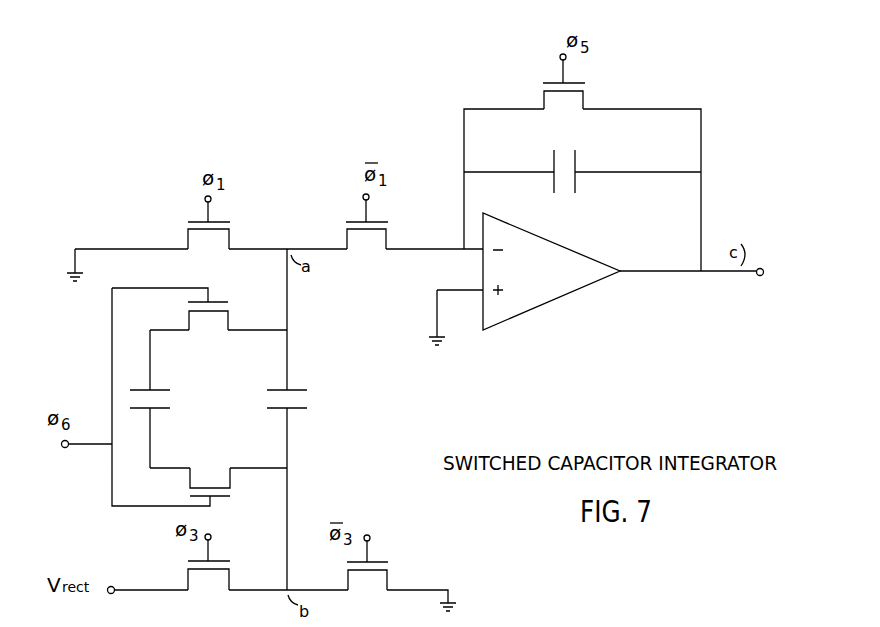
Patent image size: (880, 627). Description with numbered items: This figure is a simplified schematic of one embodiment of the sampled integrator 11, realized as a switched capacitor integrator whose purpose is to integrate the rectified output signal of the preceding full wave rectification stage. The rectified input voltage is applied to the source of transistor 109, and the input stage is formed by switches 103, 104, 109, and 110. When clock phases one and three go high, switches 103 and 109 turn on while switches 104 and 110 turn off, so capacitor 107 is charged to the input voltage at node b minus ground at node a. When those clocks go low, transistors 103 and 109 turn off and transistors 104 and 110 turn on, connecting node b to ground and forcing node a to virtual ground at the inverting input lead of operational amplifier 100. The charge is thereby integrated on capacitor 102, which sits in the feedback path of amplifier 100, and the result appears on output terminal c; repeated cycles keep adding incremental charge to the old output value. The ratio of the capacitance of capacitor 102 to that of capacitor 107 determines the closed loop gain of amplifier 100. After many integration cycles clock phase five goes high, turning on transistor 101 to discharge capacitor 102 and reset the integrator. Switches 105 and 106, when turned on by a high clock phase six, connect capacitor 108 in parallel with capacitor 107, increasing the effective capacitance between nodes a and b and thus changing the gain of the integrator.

The sampled integrator 11 is at (493, 363).
The operational amplifier 100 is at (596, 283).
The transistor 101 is at (536, 76).
The capacitor 102 is at (578, 160).
The switch 103 is at (178, 222).
The switch 104 is at (344, 222).
The switch 105 is at (240, 488).
The switch 106 is at (236, 310).
The capacitor 107 is at (300, 411).
The capacitor 108 is at (162, 410).
The transistor 109 is at (176, 566).
The switch 110 is at (389, 553).